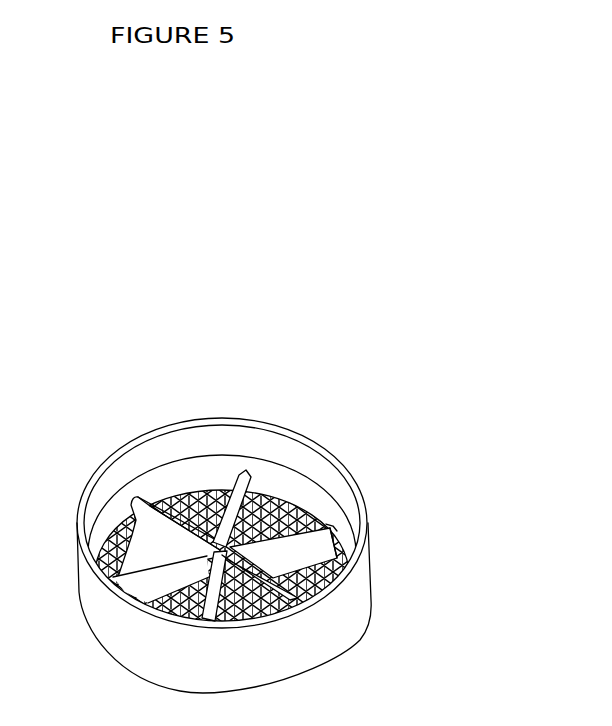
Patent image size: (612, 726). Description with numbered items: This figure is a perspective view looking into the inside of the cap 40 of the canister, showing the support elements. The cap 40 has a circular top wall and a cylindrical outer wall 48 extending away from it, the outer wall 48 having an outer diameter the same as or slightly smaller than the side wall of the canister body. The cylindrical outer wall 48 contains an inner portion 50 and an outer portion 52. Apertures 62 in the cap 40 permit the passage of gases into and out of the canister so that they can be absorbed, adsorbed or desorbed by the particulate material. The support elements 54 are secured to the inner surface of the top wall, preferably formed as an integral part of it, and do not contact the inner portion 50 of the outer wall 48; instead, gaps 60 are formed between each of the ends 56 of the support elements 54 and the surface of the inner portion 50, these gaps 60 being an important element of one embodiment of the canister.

The cap 40 is at (292, 524).
The cylindrical outer wall 48 is at (274, 535).
The inner portion 50 is at (289, 453).
The outer portion 52 is at (338, 615).
The support element 54 is at (162, 528).
The end 56 is at (133, 505).
The gap 60 is at (340, 522).
The aperture 62 is at (286, 500).